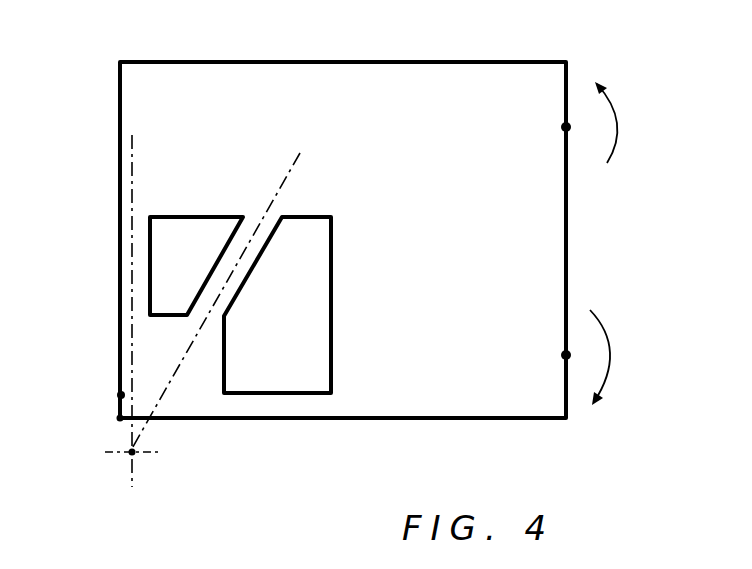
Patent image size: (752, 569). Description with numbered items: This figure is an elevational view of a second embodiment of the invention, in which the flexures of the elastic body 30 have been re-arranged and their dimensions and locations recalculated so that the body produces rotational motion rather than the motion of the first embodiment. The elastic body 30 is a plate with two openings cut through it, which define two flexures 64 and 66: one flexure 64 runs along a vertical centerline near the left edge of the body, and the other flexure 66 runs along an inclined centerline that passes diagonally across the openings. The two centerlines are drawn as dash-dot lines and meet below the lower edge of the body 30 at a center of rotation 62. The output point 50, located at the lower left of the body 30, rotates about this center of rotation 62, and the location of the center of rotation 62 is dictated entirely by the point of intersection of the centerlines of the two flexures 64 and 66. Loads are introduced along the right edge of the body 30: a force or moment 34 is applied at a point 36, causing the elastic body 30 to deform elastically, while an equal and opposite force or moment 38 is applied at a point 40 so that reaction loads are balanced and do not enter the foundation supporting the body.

The elastic body 30 is at (405, 74).
The force or moment 34 is at (613, 337).
The point 36 is at (563, 355).
The equal and opposite force or moment 38 is at (618, 125).
The point 40 is at (563, 128).
The output point 50 is at (118, 395).
The center of rotation 62 is at (130, 453).
The flexure 64 is at (125, 287).
The flexure 66 is at (228, 262).